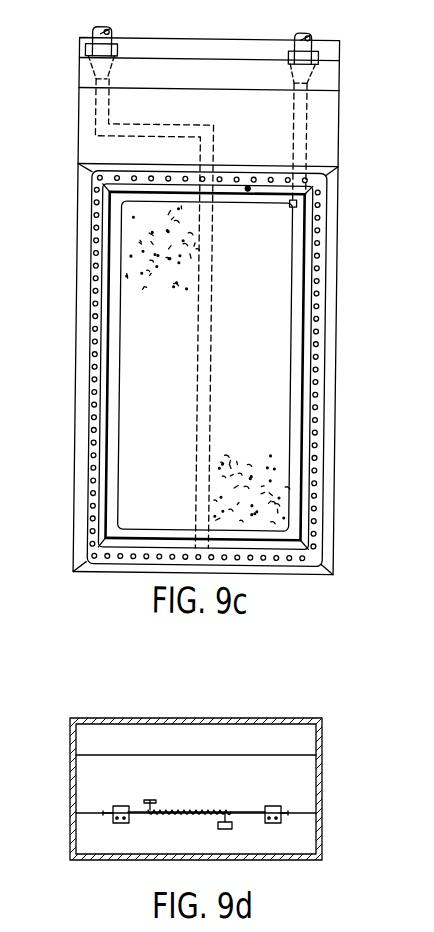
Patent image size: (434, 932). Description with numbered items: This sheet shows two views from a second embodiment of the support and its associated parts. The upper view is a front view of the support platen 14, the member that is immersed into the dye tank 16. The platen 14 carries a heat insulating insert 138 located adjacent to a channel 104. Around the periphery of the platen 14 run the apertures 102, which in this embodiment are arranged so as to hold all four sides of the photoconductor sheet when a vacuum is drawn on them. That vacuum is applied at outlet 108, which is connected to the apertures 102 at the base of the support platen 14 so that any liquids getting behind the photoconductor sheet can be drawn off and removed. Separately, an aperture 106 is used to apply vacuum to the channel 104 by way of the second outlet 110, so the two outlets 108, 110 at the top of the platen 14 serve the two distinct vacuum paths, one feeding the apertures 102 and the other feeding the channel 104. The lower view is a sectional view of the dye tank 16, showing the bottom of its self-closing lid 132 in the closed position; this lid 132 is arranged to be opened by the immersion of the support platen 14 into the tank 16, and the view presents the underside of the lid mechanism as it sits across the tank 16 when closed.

In FIG. 9c, the support platen 14 is at (78, 268).
In FIG. 9c, the apertures 102 is at (95, 213).
In FIG. 9c, the channel 104 is at (120, 242).
In FIG. 9c, the aperture 106 is at (292, 206).
In FIG. 9c, the outlet 108 is at (104, 40).
In FIG. 9c, the outlet 110 is at (302, 44).
In FIG. 9c, the heat insulating insert 138 is at (175, 311).
In FIG. 9d, the tank 16 is at (70, 836).
In FIG. 9d, the self-closing lid 132 is at (250, 794).